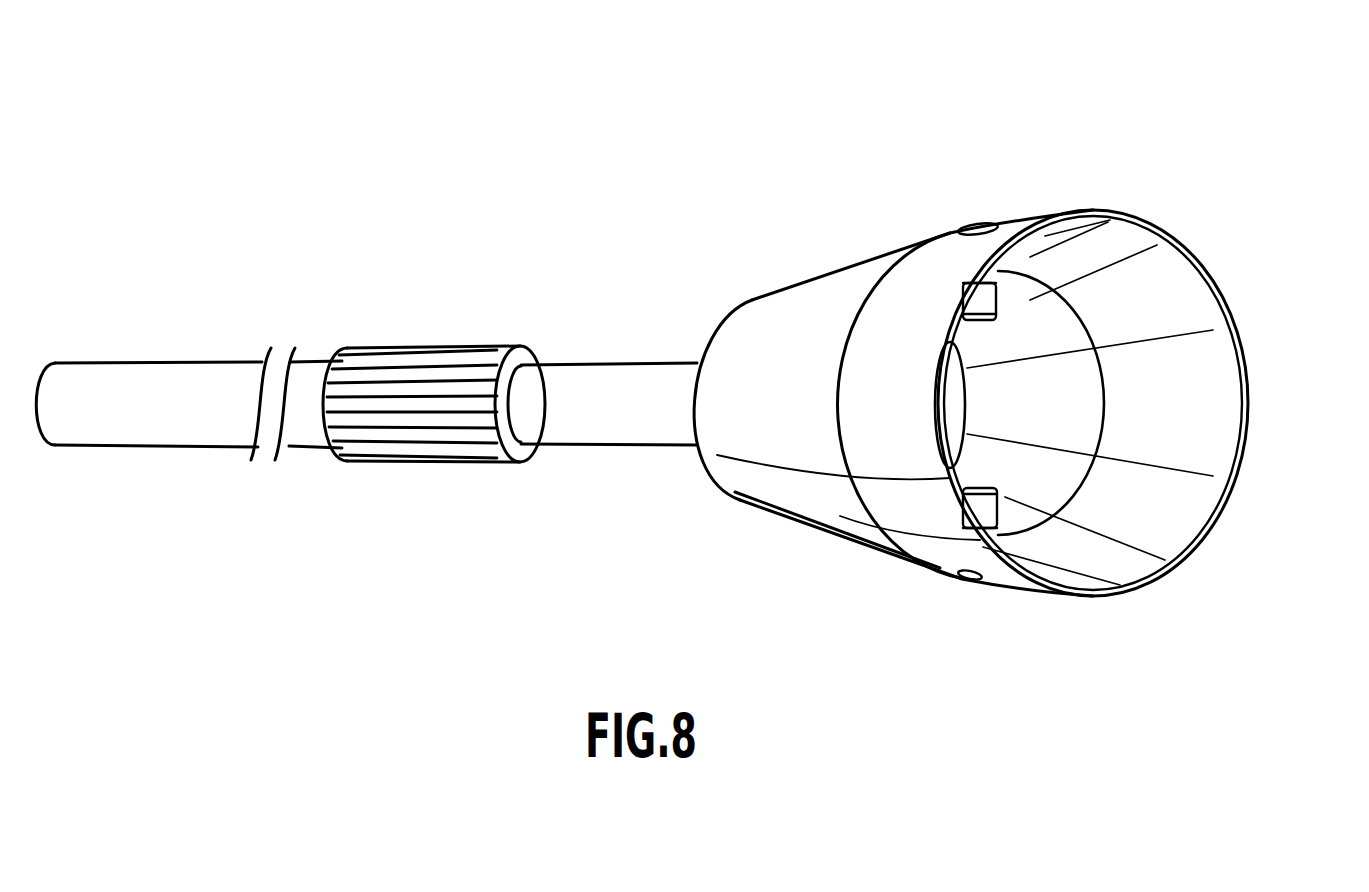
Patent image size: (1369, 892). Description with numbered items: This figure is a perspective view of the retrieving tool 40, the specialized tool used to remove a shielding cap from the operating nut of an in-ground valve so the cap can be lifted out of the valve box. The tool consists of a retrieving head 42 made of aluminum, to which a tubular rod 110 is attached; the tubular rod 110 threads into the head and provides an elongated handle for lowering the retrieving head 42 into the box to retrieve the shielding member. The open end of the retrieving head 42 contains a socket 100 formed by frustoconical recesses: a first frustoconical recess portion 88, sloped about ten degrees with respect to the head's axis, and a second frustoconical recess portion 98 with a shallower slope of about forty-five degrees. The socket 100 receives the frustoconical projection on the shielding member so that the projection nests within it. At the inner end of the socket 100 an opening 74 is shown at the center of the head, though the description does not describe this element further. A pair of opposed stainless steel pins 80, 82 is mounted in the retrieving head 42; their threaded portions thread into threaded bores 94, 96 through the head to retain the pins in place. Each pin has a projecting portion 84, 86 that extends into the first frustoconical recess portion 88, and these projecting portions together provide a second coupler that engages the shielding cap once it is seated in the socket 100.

The retrieving tool 40 is at (653, 227).
The retrieving head 42 is at (823, 266).
The central bore 74 is at (1050, 408).
The stainless steel pin 80 is at (1008, 296).
The stainless steel pin 82 is at (1008, 512).
The projecting portion 84 is at (996, 318).
The projecting portion 86 is at (998, 493).
The first frustoconical recess portion 88 is at (1035, 326).
The threaded bore 94 is at (977, 230).
The threaded bore 96 is at (973, 580).
The second frustoconical recess portion 98 is at (1167, 493).
The socket 100 is at (1166, 407).
The tubular rod 110 is at (193, 366).